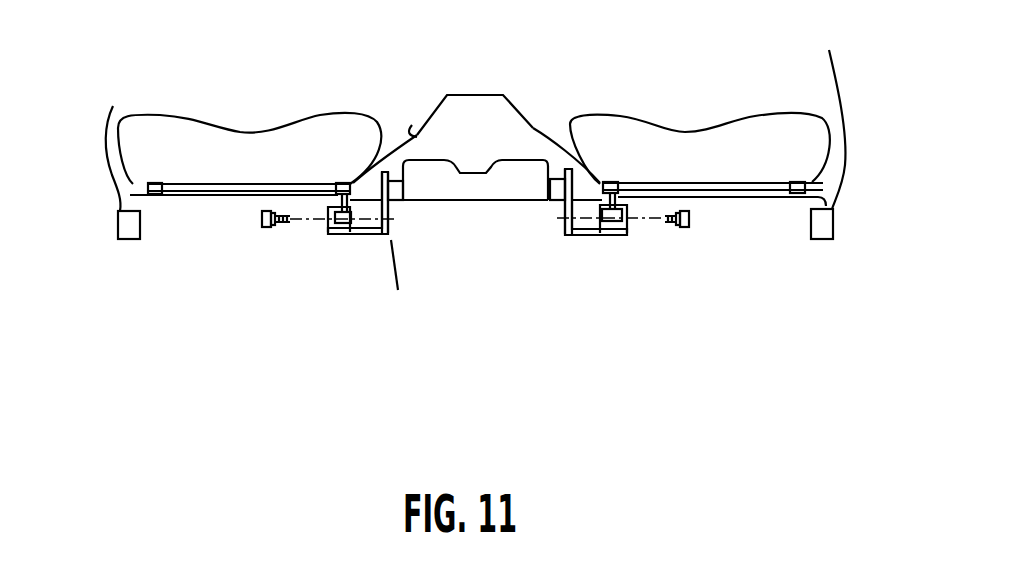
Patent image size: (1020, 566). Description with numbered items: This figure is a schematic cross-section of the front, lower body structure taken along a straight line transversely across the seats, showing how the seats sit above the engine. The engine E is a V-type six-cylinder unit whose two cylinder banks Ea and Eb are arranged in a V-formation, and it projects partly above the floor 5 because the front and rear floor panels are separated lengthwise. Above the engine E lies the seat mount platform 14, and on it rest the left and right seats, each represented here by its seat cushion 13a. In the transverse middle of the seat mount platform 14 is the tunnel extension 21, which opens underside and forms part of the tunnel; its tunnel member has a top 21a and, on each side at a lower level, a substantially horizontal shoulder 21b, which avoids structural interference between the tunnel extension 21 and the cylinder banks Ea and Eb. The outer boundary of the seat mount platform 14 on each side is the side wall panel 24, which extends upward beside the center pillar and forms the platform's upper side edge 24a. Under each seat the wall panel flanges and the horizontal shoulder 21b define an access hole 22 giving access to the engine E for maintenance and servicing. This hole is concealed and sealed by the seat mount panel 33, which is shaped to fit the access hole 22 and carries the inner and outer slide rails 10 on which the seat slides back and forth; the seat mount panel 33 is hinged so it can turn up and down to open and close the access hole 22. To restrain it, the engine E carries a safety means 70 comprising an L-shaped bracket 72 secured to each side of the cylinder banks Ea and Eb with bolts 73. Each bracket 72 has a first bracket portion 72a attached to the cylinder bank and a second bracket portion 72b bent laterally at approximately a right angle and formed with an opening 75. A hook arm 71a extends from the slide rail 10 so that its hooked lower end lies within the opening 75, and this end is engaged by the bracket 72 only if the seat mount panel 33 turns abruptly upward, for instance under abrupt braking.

The floor 5 is at (335, 235).
The slide rails 10 is at (153, 186).
The seat cushion 13a is at (165, 119).
The seat mount platform 14 is at (110, 218).
The tunnel extension 21 is at (503, 86).
The top 21a is at (477, 93).
The horizontal shoulder 21b is at (412, 125).
The access hole 22 is at (140, 214).
The side wall panel 24 is at (118, 230).
The upper side edge 24a is at (476, 114).
The seat mount panel 33 is at (417, 137).
The safety means 70 is at (327, 320).
The hook arm 71a is at (333, 230).
The bracket 72 is at (401, 223).
The first bracket portion 72a is at (408, 186).
The second bracket portion 72b is at (356, 235).
The bolts 73 is at (262, 219).
The opening 75 is at (620, 236).
The engine E is at (470, 173).
The cylinder bank Ea is at (391, 250).
The cylinder bank Eb is at (519, 148).